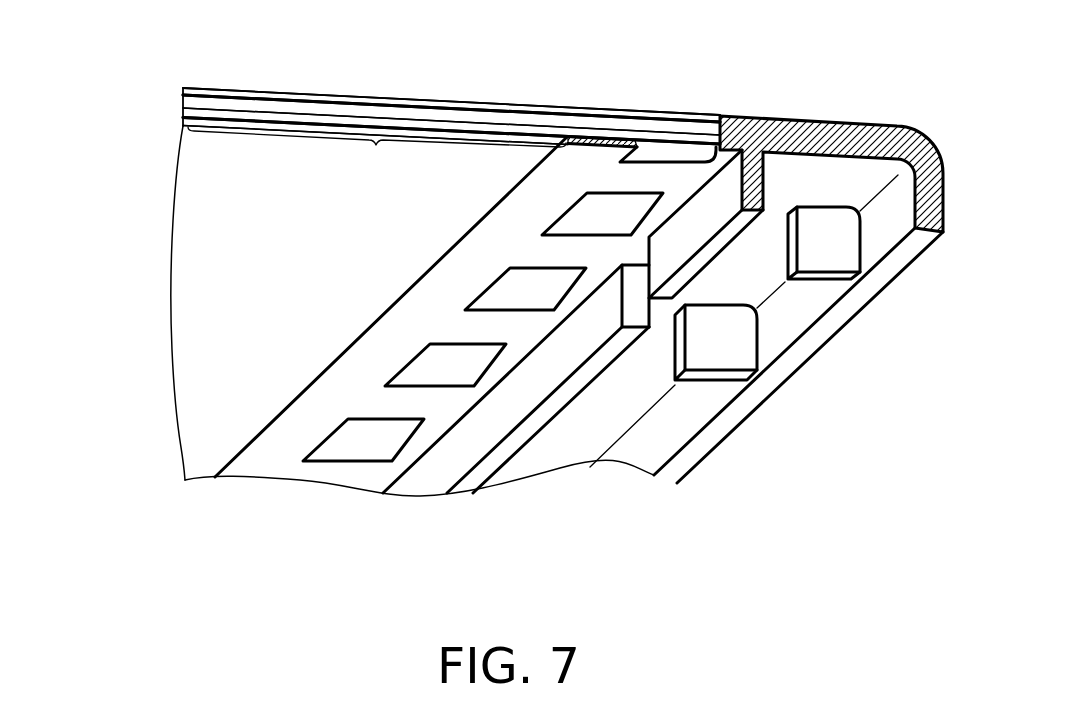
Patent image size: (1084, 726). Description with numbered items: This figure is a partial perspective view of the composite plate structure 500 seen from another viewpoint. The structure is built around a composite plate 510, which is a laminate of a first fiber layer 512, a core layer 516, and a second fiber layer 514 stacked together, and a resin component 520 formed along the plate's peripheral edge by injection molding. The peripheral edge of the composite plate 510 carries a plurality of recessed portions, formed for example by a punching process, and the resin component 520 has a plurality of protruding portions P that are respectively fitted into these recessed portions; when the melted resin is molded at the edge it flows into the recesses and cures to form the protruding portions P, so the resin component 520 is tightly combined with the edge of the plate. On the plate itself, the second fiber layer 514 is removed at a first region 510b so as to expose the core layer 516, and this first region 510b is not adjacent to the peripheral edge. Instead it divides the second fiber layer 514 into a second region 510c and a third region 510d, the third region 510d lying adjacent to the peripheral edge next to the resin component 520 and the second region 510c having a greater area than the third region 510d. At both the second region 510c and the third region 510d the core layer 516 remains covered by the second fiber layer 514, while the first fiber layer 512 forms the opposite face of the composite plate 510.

The composite plate structure 500 is at (884, 545).
The composite plate 510 is at (102, 37).
The first fiber layer 512 is at (202, 90).
The second fiber layer 514 is at (195, 119).
The core layer 516 is at (197, 102).
The second region 510c is at (377, 156).
The first region 510b is at (568, 140).
The third region 510d is at (641, 147).
The resin component 520 is at (833, 143).
The protruding portions P is at (387, 402).